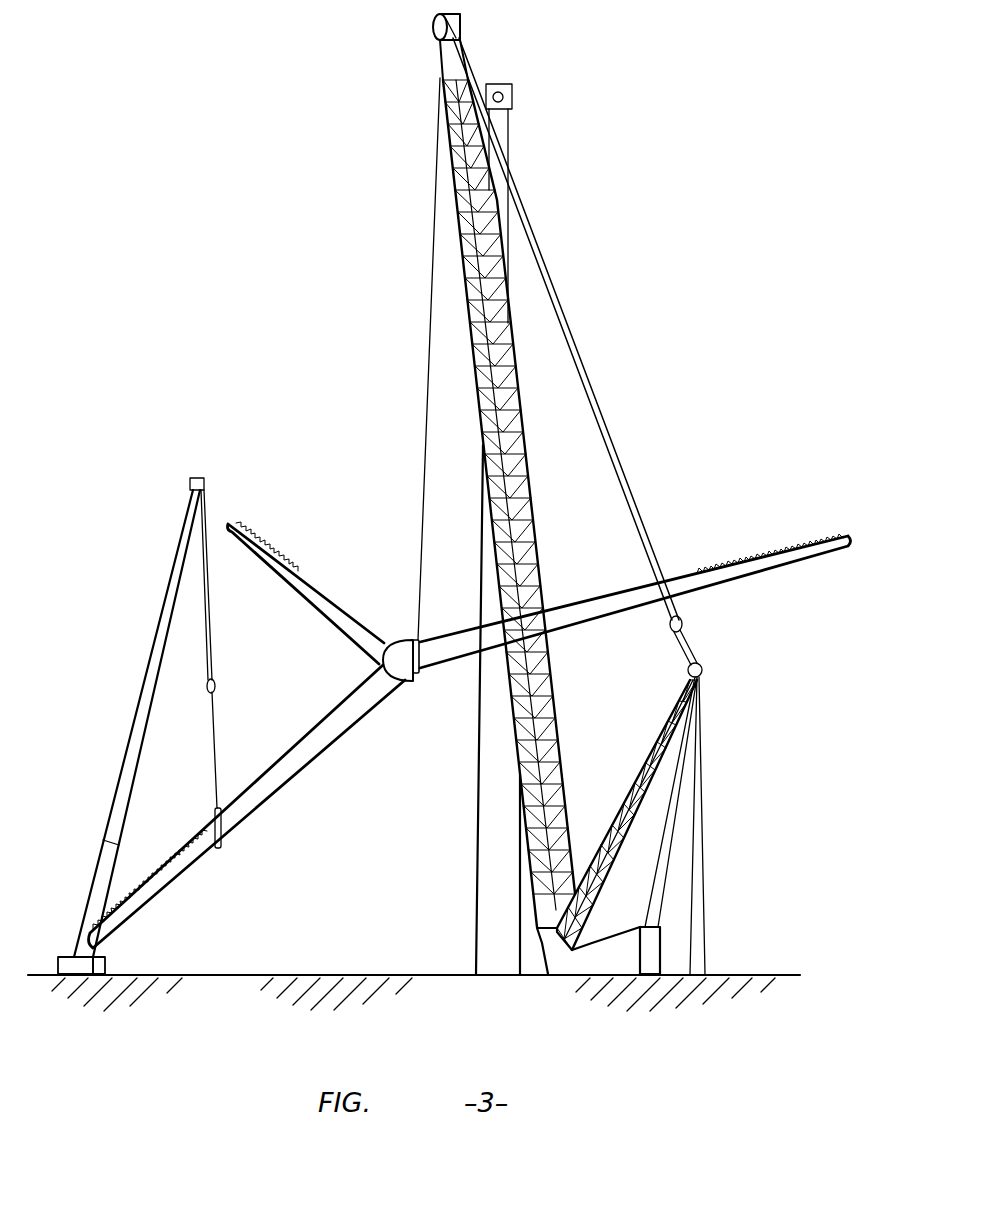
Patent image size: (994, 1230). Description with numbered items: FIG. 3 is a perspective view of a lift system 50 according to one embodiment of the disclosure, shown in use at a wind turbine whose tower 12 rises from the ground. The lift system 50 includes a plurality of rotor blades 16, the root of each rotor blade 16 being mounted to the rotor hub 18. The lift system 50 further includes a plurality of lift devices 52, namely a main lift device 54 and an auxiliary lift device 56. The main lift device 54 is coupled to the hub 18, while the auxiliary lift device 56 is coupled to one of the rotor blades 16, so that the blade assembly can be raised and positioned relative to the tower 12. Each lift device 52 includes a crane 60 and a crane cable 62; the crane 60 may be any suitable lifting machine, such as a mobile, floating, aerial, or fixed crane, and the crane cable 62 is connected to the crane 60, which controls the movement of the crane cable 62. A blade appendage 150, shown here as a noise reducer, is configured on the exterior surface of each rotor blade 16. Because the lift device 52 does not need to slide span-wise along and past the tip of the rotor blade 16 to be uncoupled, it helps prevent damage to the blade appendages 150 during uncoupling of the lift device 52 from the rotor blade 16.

The lift system 50 is at (300, 211).
The tower 12 is at (484, 890).
The rotor blade 16 is at (317, 592).
The rotor hub 18 is at (377, 640).
The lift device 52 is at (614, 301).
The main lift device 54 is at (557, 551).
The auxiliary lift device 56 is at (116, 698).
The crane 60 is at (522, 441).
The crane cable 62 is at (430, 317).
The blade appendage 150 is at (764, 548).